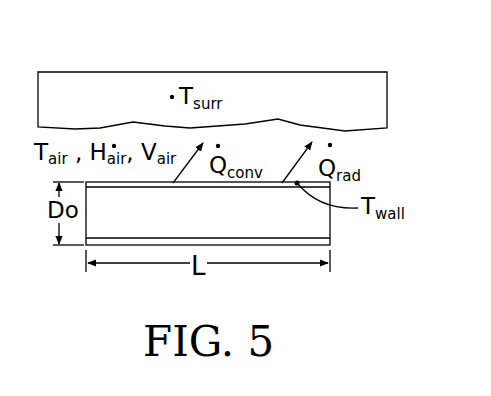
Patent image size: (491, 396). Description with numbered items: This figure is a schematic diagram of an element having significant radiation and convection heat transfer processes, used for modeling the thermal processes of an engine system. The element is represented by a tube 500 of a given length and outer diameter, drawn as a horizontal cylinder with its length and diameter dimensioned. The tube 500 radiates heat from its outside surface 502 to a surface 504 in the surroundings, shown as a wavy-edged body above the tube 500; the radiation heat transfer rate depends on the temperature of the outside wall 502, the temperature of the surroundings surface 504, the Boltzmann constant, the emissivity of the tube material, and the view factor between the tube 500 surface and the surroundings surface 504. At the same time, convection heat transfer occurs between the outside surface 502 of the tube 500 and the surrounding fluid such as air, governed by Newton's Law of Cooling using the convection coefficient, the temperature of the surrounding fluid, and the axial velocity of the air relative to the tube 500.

The tube 500 is at (334, 234).
The outside surface 502 is at (326, 185).
The surroundings surface 504 is at (93, 80).